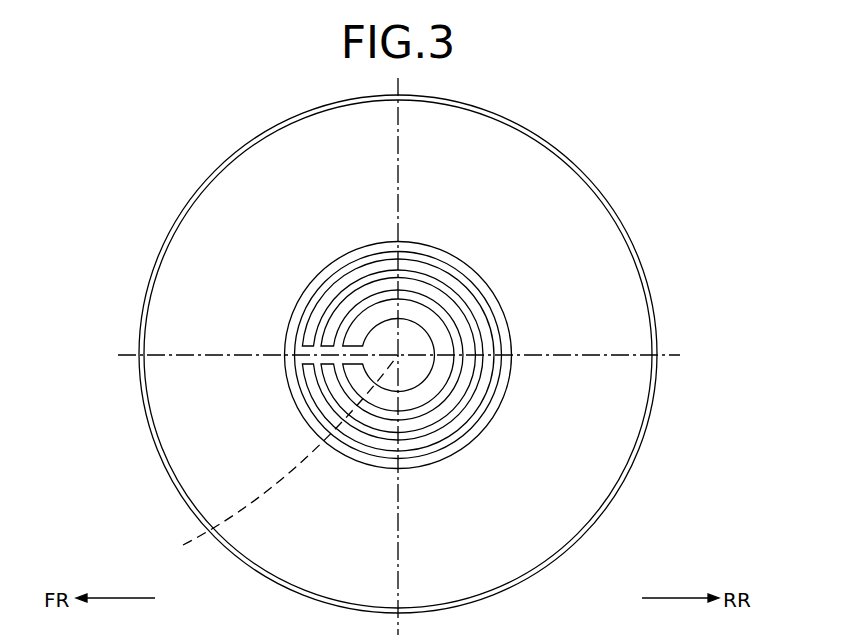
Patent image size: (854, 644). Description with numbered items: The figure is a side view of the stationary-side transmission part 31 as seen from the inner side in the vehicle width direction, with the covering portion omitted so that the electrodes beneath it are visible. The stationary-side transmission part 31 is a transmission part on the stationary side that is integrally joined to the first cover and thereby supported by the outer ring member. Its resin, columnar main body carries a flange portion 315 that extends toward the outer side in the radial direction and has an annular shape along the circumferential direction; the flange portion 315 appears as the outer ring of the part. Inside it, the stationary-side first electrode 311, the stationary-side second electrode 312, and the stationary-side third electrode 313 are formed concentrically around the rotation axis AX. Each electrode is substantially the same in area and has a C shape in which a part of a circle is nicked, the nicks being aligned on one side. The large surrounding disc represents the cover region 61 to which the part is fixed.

The stationary-side transmission part 31 is at (492, 326).
The stationary-side first electrode 311 is at (433, 271).
The stationary-side second electrode 312 is at (453, 307).
The stationary-side third electrode 313 is at (442, 336).
The flange portion 315 is at (423, 243).
The disc member 61 is at (562, 447).
The axis AX is at (272, 457).